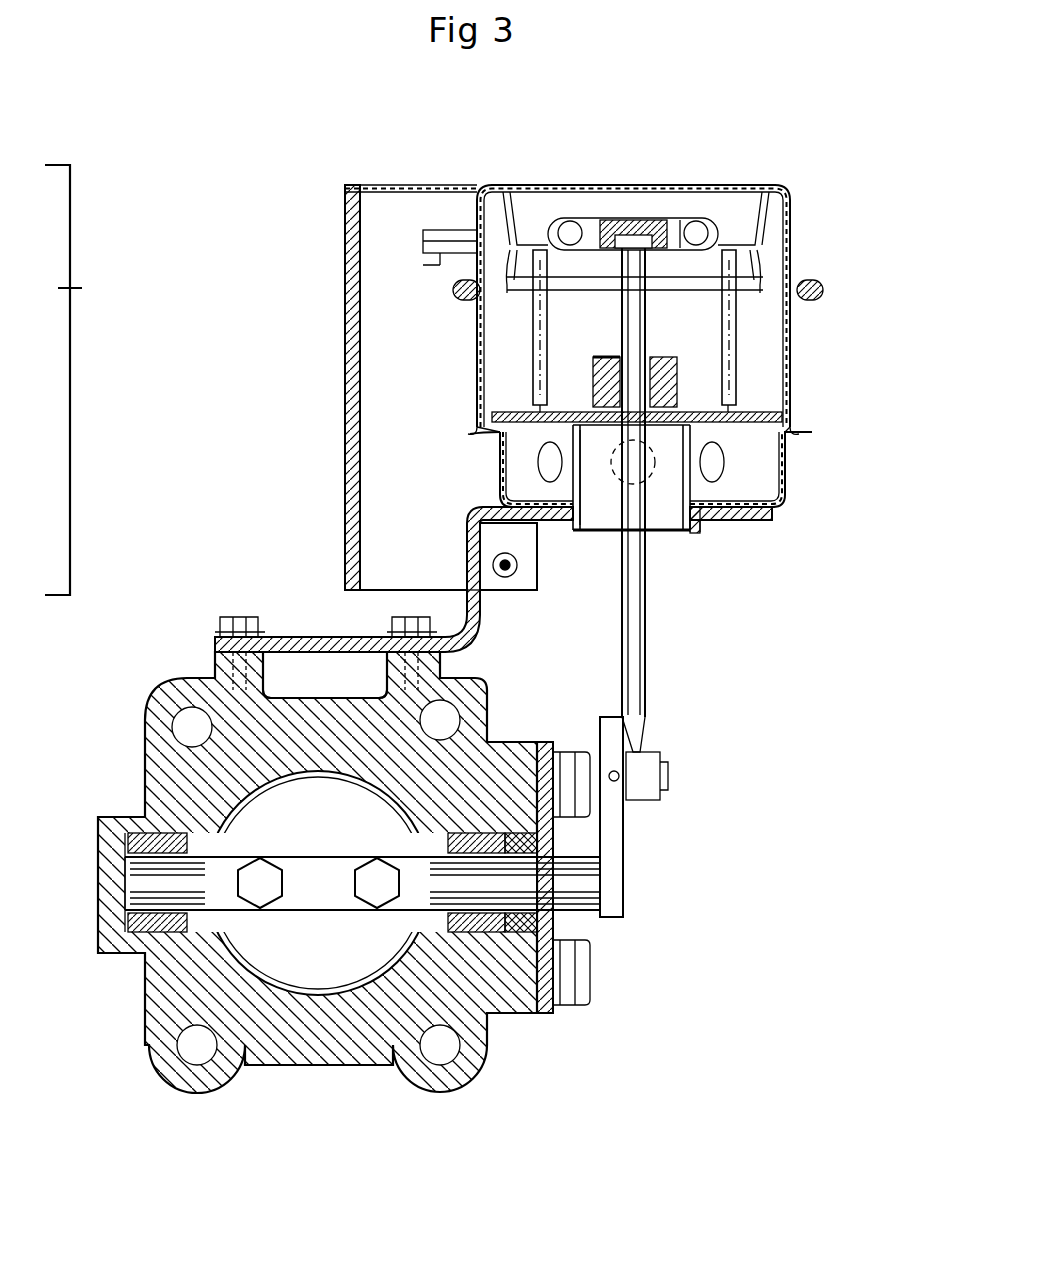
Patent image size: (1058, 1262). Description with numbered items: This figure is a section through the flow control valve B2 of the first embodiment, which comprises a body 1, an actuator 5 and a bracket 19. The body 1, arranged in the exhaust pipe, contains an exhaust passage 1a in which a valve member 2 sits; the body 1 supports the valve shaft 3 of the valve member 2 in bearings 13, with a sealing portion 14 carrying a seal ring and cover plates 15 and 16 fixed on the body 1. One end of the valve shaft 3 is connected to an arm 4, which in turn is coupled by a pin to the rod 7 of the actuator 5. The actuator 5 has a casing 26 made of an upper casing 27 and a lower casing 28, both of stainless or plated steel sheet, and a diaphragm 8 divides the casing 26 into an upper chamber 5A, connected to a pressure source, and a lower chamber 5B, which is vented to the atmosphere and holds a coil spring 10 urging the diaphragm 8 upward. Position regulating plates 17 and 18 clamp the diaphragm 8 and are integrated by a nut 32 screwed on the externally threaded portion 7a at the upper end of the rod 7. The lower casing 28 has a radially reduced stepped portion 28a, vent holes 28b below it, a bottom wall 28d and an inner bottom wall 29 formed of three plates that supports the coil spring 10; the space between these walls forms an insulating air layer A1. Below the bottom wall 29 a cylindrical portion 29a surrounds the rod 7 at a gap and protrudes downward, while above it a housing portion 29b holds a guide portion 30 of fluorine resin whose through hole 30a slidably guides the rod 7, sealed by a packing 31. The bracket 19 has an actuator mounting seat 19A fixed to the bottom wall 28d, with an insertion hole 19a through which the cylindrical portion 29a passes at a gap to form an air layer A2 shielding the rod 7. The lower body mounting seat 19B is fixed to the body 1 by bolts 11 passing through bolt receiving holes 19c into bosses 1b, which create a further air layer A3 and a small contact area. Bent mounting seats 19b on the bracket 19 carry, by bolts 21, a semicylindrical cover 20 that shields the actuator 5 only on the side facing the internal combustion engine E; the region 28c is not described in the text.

The body 1 is at (345, 1065).
The exhaust passage 1a is at (320, 975).
The bosses 1b is at (215, 665).
The valve member 2 is at (318, 985).
The valve shaft 3 is at (450, 1025).
The arm 4 is at (623, 855).
The actuator 5 is at (629, 228).
The upper chamber 5A is at (500, 208).
The lower chamber 5B is at (500, 365).
The rod 7 is at (650, 655).
The externally threaded portion 7a is at (633, 220).
The diaphragm 8 is at (800, 282).
The coil spring 10 is at (760, 380).
The bolts 11 is at (238, 617).
The bearings 13 is at (160, 935).
The sealing portion 14 is at (555, 925).
The cover plate 15 is at (112, 955).
The cover plate 16 is at (545, 1015).
The position regulating plate 17 is at (560, 218).
The position regulating plate 18 is at (505, 290).
The bracket 19 is at (467, 545).
The actuator mounting seat 19A is at (760, 512).
The body mounting seat 19B is at (315, 637).
The insertion hole 19a is at (705, 530).
The bent mounting seats 19b is at (520, 555).
The bolt receiving holes 19c is at (220, 640).
The cover 20 is at (382, 200).
The bolts 21 is at (512, 570).
The casing 26 is at (681, 296).
The upper casing 27 is at (790, 200).
The lower casing 28 is at (860, 365).
The stepped portion 28a is at (790, 427).
The vent holes 28b is at (786, 470).
The bottom portion 28c is at (695, 520).
The bottom wall 28d is at (760, 520).
The inner bottom wall 29 is at (782, 412).
The cylindrical portion 29a is at (665, 530).
The housing portion 29b is at (655, 360).
The guide portion 30 is at (677, 405).
The through hole 30a is at (593, 405).
The packing 31 is at (607, 357).
The nut 32 is at (680, 220).
The air layer A1 is at (540, 465).
The air layer A2 is at (610, 515).
The insulating air layer A3 is at (330, 680).
The internal combustion engine E is at (82, 288).
The flow control valve B2 is at (690, 1082).